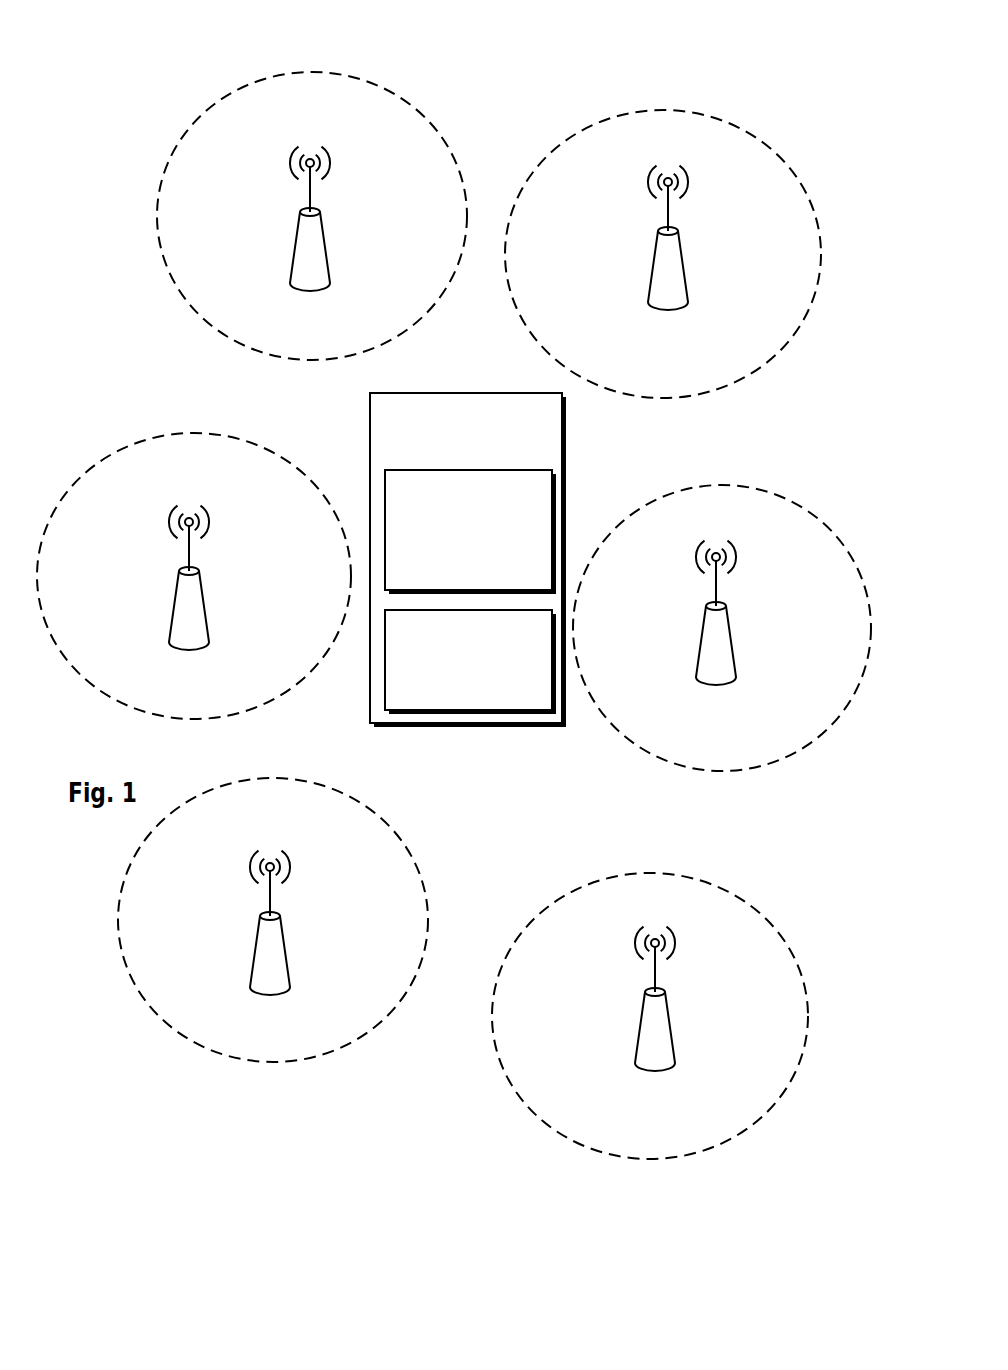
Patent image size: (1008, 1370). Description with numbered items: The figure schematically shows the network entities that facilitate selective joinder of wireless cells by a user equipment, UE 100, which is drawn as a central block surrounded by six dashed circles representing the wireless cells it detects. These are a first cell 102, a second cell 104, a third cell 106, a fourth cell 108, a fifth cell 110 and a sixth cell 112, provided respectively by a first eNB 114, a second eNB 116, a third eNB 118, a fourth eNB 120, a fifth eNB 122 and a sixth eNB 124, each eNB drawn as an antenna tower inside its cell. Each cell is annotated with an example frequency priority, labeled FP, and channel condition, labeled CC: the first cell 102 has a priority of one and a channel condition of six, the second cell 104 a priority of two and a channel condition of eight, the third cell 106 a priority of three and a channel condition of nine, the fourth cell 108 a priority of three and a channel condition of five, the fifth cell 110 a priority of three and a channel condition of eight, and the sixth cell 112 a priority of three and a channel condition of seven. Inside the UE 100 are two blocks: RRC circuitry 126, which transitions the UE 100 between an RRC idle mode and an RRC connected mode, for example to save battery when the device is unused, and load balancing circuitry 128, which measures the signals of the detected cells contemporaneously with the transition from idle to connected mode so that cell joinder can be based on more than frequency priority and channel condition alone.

The user equipment 100 is at (450, 452).
The first wireless cell 102 is at (375, 85).
The second wireless cell 104 is at (730, 124).
The third wireless cell 106 is at (780, 497).
The fourth wireless cell 108 is at (718, 887).
The fifth wireless cell 110 is at (315, 783).
The sixth wireless cell 112 is at (238, 439).
The first eNB 114 is at (332, 247).
The second eNB 116 is at (690, 266).
The third eNB 118 is at (738, 641).
The fourth eNB 120 is at (677, 1027).
The fifth eNB 122 is at (292, 951).
The sixth eNB 124 is at (211, 606).
The RRC circuitry 126 is at (452, 694).
The load balancing circuitry 128 is at (452, 578).